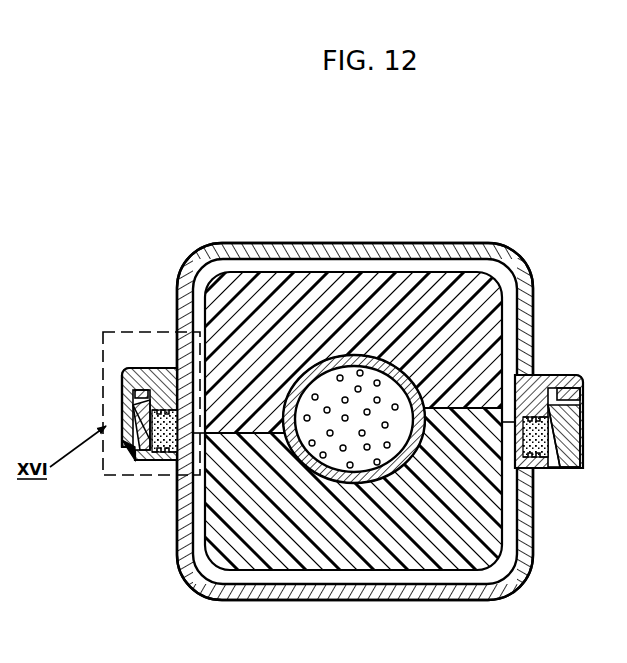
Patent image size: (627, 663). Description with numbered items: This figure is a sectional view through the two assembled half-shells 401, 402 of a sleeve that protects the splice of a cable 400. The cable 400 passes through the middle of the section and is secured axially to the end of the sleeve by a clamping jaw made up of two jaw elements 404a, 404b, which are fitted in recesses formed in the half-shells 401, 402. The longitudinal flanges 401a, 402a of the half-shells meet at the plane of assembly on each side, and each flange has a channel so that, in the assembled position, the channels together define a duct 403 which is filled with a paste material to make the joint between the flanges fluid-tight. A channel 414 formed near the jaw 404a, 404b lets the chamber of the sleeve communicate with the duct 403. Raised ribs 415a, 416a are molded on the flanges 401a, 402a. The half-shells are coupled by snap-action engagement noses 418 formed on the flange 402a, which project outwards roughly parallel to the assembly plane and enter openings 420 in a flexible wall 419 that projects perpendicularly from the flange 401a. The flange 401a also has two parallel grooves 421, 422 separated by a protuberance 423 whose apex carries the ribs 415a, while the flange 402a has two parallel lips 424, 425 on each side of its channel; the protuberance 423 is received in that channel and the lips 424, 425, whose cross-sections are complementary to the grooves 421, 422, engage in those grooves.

The cable 400 is at (352, 484).
The half-shell 401 is at (268, 242).
The longitudinal flange 401a is at (118, 412).
The half-shell 402 is at (206, 599).
The longitudinal flange 402a is at (212, 480).
The duct 403 is at (142, 456).
The jaw element 404a is at (388, 290).
The jaw element 404b is at (435, 532).
The channel 414 is at (282, 576).
The rib 415a is at (537, 462).
The rib 416a is at (533, 468).
The snap-action engagement nose 418 is at (118, 437).
The flexible wall 419 is at (128, 393).
The opening 420 is at (120, 410).
The groove 421 is at (590, 387).
The groove 422 is at (537, 398).
The protuberance 423 is at (148, 370).
The lip 424 is at (132, 382).
The lip 425 is at (222, 372).